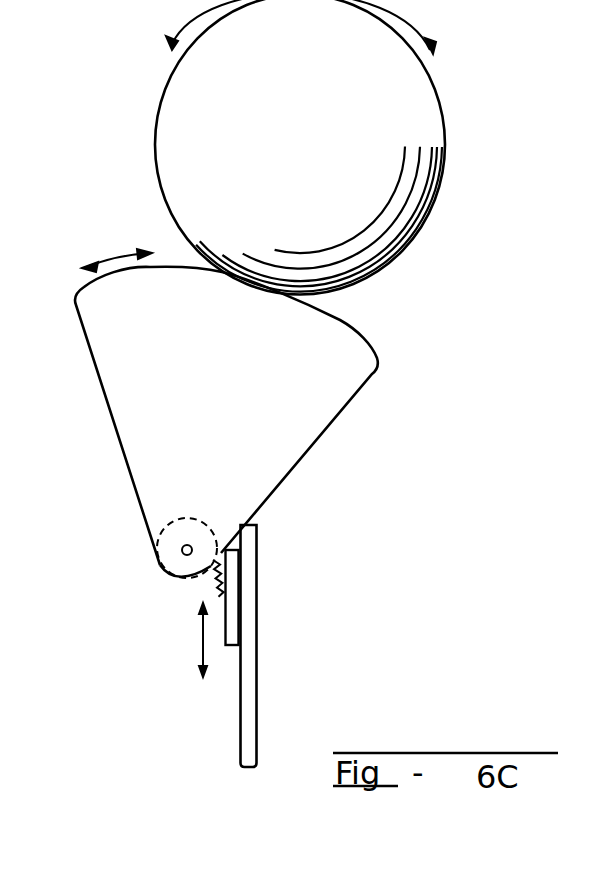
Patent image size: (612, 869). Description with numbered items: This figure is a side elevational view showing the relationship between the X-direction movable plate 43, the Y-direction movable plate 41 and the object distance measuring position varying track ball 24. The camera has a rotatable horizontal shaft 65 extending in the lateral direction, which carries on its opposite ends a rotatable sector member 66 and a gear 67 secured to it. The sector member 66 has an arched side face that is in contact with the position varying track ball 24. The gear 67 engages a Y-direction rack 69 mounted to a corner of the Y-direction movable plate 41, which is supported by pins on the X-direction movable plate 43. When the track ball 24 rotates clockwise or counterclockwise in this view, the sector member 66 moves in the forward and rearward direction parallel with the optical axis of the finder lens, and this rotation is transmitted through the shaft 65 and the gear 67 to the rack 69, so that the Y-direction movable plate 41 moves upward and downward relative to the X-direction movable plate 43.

The object distance measuring position varying track ball 24 is at (430, 80).
The sector member 66 is at (376, 372).
The gear 67 is at (157, 540).
The horizontal shaft 65 is at (182, 554).
The Y-direction rack 69 is at (212, 582).
The Y-direction movable plate 41 is at (231, 645).
The X-direction movable plate 43 is at (258, 680).